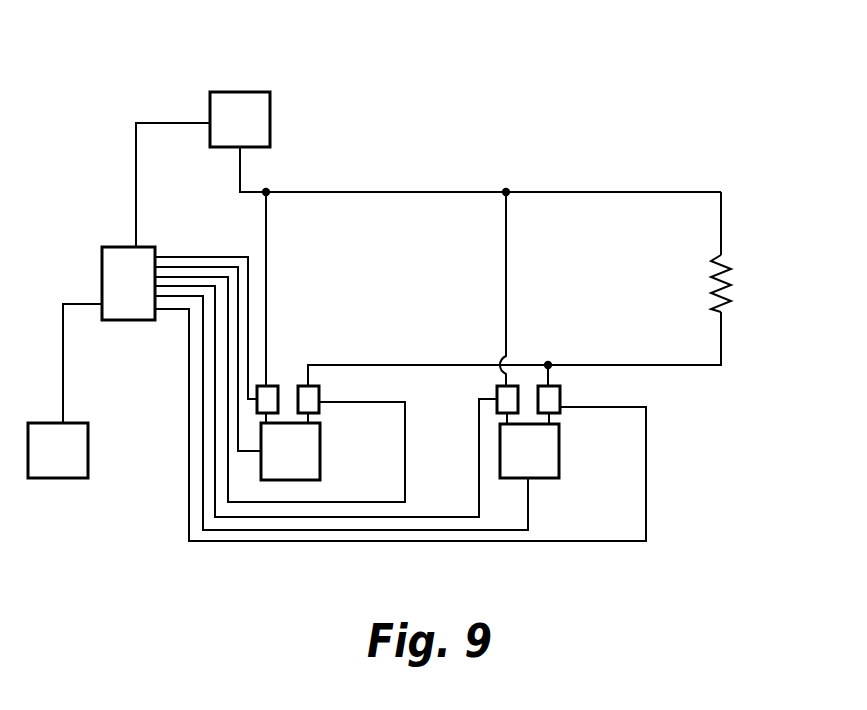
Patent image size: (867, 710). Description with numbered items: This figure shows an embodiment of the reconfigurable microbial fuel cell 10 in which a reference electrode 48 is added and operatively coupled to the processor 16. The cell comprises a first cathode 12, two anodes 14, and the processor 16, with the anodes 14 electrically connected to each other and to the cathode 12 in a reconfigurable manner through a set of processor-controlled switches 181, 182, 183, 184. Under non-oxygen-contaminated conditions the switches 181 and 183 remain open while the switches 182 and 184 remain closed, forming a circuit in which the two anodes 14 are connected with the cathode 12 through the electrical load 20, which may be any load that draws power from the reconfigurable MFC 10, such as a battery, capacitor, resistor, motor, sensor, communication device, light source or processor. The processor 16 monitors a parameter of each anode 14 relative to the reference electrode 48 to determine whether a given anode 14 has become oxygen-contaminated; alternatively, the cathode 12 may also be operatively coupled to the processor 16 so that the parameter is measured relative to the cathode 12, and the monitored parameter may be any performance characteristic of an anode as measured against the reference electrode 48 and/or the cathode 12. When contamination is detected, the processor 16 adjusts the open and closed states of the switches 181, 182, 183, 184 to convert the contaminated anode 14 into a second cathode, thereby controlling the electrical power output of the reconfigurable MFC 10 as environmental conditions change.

The reconfigurable microbial fuel cell 10 is at (122, 66).
The first cathode 12 is at (270, 112).
The anode 14 is at (320, 455).
The processor 16 is at (105, 245).
The first switch 181 is at (277, 386).
The second switch 182 is at (298, 386).
The third switch 183 is at (497, 400).
The fourth switch 184 is at (560, 400).
The electrical load 20 is at (731, 280).
The reference electrode 48 is at (88, 452).